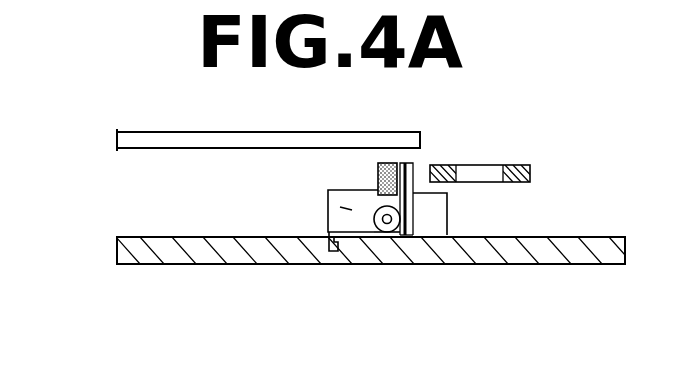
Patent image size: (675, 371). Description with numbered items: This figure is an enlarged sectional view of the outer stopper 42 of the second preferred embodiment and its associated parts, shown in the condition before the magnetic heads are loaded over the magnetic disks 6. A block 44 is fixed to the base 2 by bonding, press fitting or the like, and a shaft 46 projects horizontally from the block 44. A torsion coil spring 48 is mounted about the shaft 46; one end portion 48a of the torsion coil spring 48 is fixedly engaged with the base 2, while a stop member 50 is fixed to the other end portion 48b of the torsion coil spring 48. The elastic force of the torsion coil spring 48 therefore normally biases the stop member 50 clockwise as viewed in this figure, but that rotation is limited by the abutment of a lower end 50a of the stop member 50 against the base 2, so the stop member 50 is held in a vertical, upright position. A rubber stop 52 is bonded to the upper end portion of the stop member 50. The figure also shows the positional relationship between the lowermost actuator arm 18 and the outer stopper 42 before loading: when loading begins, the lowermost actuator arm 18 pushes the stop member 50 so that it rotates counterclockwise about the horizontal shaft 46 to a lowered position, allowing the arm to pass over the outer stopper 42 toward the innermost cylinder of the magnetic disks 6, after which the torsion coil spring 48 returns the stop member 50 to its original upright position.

The base 2 is at (601, 243).
The magnetic disks 6 is at (170, 132).
The lowermost actuator arm 18 is at (520, 164).
The outer stopper 42 is at (352, 209).
The block 44 is at (432, 228).
The shaft 46 is at (378, 206).
The torsion coil spring 48 is at (387, 232).
The one end portion of the torsion coil spring 48a is at (327, 251).
The other end portion of the torsion coil spring 48b is at (412, 201).
The stop member 50 is at (407, 163).
The lower end of the stop member 50a is at (404, 237).
The rubber stop 52 is at (377, 164).